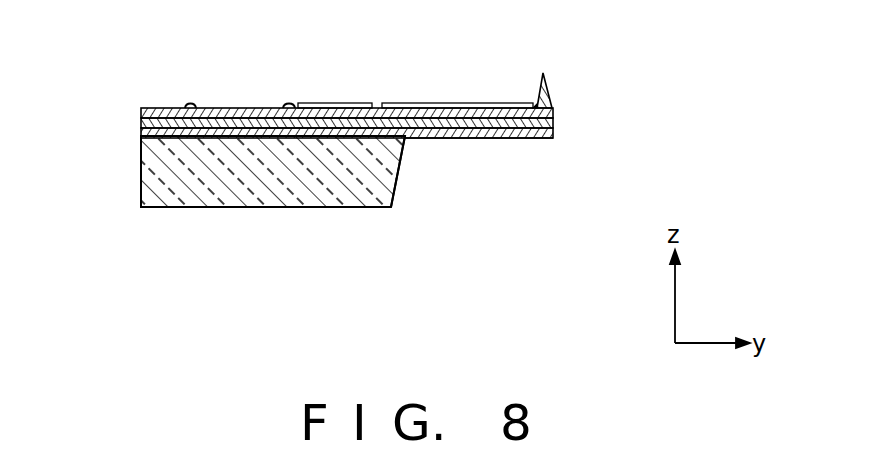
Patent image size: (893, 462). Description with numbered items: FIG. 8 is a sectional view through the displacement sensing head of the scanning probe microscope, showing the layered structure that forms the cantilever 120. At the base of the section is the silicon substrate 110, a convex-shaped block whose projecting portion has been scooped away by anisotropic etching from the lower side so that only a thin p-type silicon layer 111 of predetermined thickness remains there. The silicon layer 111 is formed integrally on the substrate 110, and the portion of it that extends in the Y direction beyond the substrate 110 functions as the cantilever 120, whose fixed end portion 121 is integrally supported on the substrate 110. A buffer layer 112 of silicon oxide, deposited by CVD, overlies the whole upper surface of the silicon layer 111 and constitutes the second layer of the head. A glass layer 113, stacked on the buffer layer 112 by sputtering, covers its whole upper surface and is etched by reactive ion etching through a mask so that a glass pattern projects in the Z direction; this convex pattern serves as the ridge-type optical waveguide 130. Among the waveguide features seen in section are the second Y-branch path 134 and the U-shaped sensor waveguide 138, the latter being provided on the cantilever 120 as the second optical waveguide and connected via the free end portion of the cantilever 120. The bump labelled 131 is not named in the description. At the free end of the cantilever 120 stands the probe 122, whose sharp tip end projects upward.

The silicon substrate 110 is at (141, 183).
The silicon layer 111 is at (141, 132).
The buffer layer 112 is at (141, 122).
The glass layer 113 is at (141, 110).
The cantilever 120 is at (483, 142).
The fixed end portion 121 is at (407, 138).
The probe 122 is at (546, 80).
The ridge-type optical waveguide 130 is at (350, 95).
The bump 131 is at (189, 100).
The second Y-branch path 134 is at (289, 100).
The sensor waveguide 138 is at (465, 103).